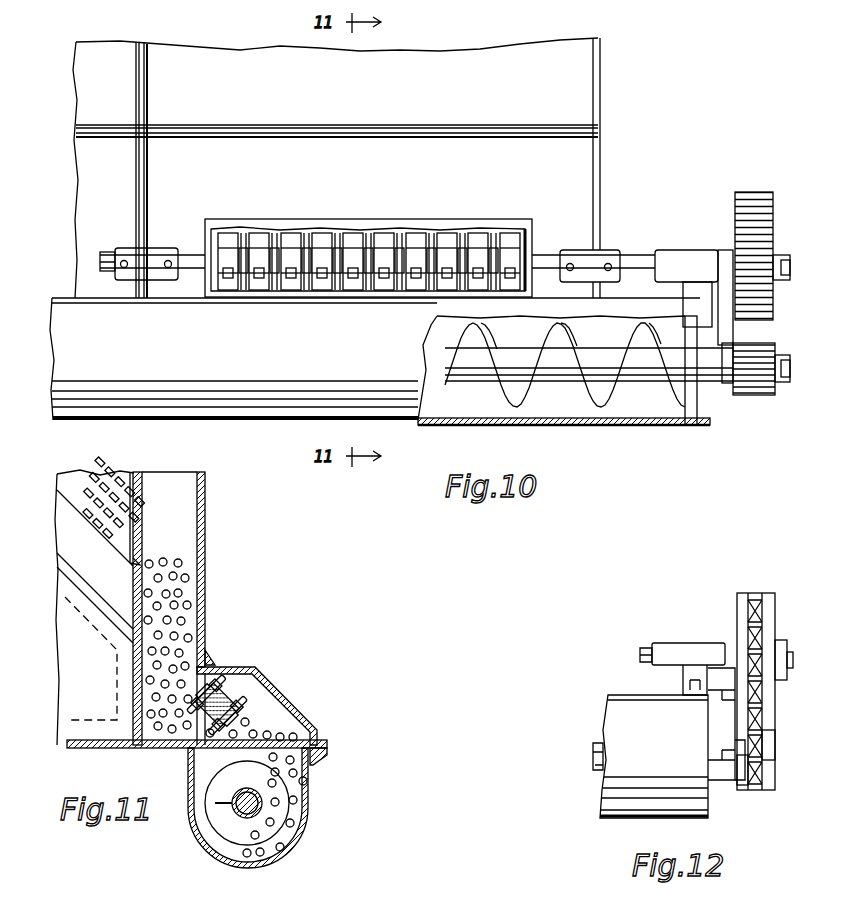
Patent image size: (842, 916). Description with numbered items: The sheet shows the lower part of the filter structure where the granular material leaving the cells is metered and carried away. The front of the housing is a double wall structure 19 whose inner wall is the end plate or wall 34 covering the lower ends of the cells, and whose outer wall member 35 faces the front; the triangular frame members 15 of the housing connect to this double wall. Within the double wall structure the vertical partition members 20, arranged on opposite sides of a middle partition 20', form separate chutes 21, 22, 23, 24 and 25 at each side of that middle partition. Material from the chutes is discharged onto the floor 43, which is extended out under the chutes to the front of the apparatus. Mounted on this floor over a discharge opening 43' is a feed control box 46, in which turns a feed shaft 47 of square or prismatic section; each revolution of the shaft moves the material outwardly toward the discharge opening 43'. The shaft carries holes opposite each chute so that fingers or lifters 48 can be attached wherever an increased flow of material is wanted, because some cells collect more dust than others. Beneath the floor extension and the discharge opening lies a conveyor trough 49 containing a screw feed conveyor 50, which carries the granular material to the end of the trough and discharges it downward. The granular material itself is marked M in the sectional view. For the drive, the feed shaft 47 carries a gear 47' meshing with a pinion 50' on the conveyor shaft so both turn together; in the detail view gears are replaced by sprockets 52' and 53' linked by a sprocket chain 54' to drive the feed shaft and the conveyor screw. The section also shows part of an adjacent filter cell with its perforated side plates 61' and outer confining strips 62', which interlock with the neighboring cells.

In FIG. 10, the outer wall member 35 is at (578, 160).
In FIG. 11, the outer wall member 35 is at (206, 530).
In FIG. 10, the conveyor trough 49 is at (253, 385).
In FIG. 11, the conveyor trough 49 is at (306, 810).
In FIG. 12, the conveyor trough 49 is at (620, 722).
In FIG. 10, the screw feed conveyor 50 is at (589, 392).
In FIG. 11, the screw feed conveyor 50 is at (219, 808).
In FIG. 12, the screw feed conveyor 50 is at (576, 748).
In FIG. 10, the pinion 50' is at (761, 395).
In FIG. 10, the feed shaft 47 is at (416, 267).
In FIG. 11, the feed shaft 47 is at (223, 676).
In FIG. 12, the feed shaft 47 is at (662, 653).
In FIG. 10, the gear 47' is at (756, 236).
In FIG. 10, the feed control box 46 is at (308, 222).
In FIG. 11, the feed control box 46 is at (255, 668).
In FIG. 10, the chute 22 is at (240, 236).
In FIG. 10, the chute 21 is at (257, 236).
In FIG. 10, the chute 23 is at (290, 236).
In FIG. 10, the chute 24 is at (322, 236).
In FIG. 10, the chute 25 is at (348, 236).
In FIG. 10, the fingers or lifters 48 is at (385, 240).
In FIG. 11, the fingers or lifters 48 is at (195, 712).
In FIG. 10, the vertical partition members 20 is at (368, 291).
In FIG. 10, the middle partition 20' is at (363, 291).
In FIG. 11, the outer confining strips 62' is at (84, 607).
In FIG. 11, the perforated side plates 61' is at (106, 491).
In FIG. 11, the frame members 15 is at (100, 662).
In FIG. 11, the end plate or wall 34 is at (143, 533).
In FIG. 11, the double wall structure 19 is at (200, 485).
In FIG. 11, the material M is at (187, 606).
In FIG. 11, the floor 43 is at (177, 762).
In FIG. 11, the discharge opening 43' is at (339, 774).
In FIG. 12, the sprocket 52' is at (743, 691).
In FIG. 12, the sprocket chain 54' is at (784, 743).
In FIG. 12, the sprocket 53' is at (771, 768).